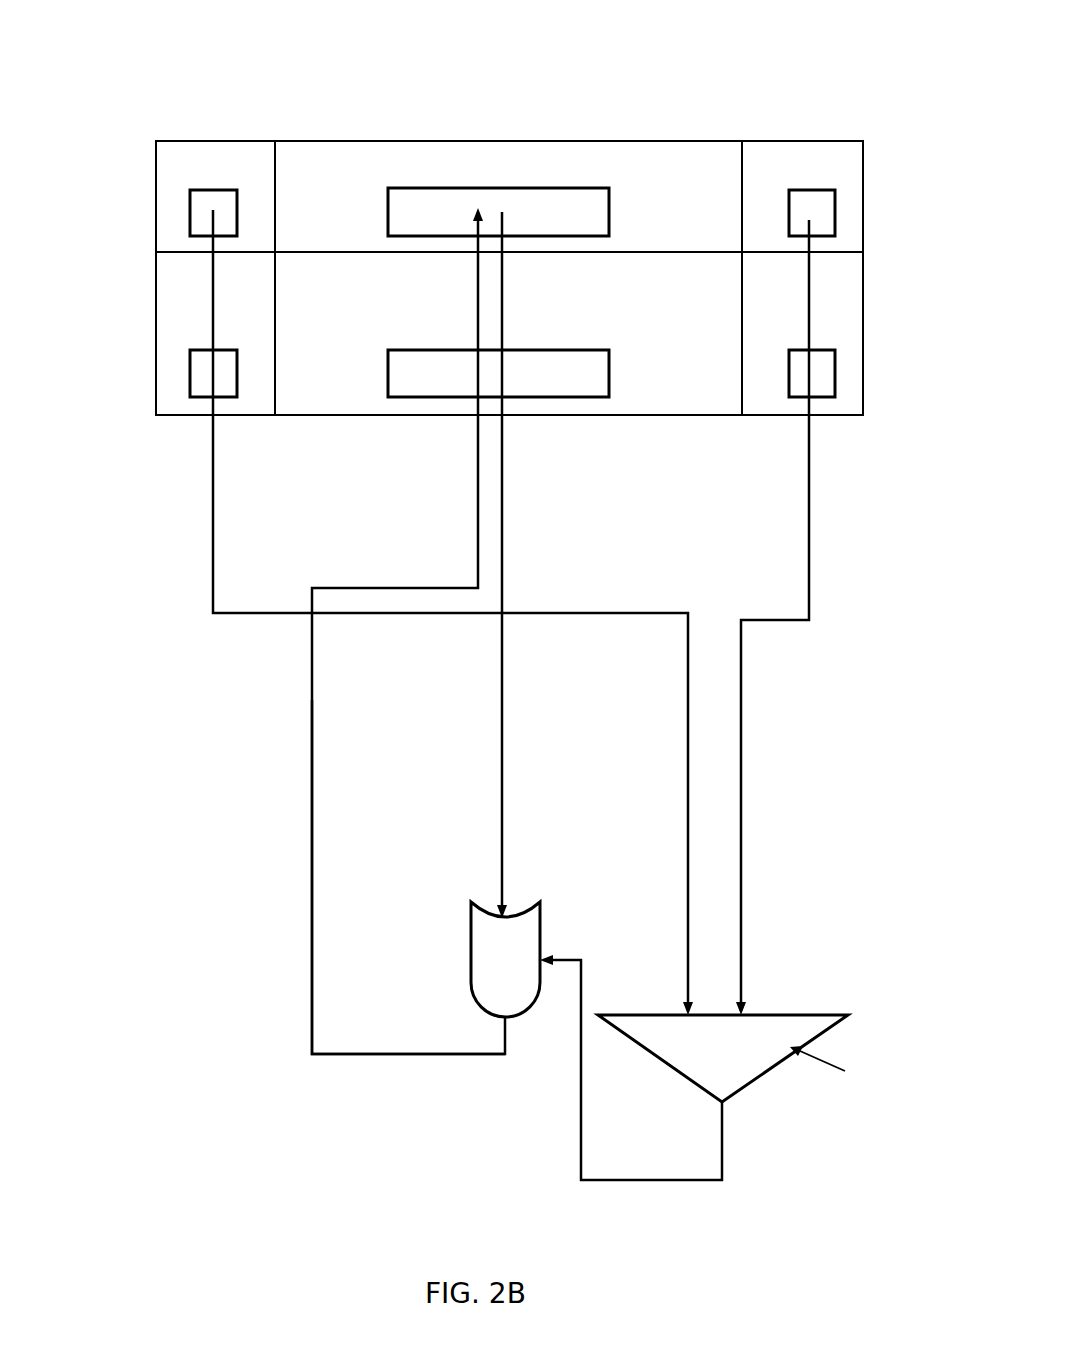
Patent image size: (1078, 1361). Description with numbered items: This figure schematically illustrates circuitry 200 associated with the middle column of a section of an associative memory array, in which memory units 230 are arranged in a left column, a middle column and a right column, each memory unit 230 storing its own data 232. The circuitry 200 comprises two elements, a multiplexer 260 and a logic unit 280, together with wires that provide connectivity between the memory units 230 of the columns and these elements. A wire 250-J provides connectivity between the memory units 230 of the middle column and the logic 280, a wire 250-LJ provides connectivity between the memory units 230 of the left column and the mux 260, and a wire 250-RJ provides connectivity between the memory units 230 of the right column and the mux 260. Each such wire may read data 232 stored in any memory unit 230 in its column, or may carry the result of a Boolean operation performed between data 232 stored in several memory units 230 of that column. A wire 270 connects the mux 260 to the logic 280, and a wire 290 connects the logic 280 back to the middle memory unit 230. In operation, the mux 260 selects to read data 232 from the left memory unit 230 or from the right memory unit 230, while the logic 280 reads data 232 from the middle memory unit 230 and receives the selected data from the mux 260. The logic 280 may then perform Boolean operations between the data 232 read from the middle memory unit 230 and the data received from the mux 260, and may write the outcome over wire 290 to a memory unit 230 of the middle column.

The circuitry 200 is at (634, 90).
The memory unit 230 is at (180, 310).
The data 232 is at (240, 175).
The wire 250-J is at (509, 515).
The wire 250-LJ is at (687, 727).
The wire 250-RJ is at (742, 747).
The multiplexer 260 is at (787, 1013).
The wire 270 is at (663, 1175).
The logic unit 280 is at (465, 935).
The wire 290 is at (312, 880).